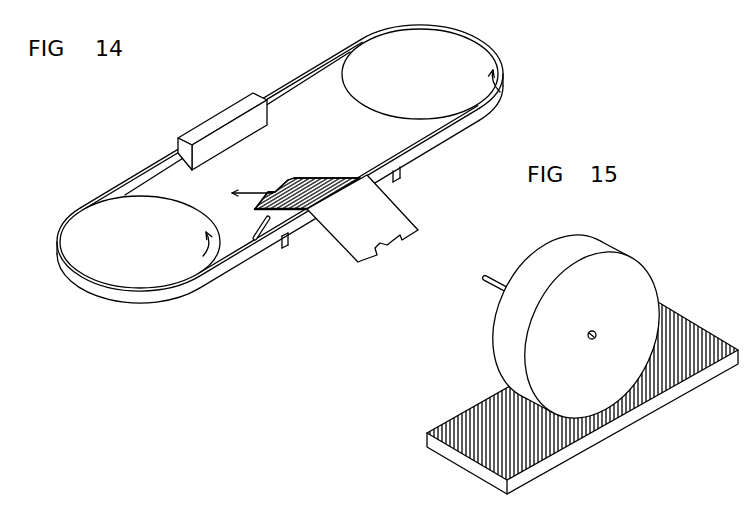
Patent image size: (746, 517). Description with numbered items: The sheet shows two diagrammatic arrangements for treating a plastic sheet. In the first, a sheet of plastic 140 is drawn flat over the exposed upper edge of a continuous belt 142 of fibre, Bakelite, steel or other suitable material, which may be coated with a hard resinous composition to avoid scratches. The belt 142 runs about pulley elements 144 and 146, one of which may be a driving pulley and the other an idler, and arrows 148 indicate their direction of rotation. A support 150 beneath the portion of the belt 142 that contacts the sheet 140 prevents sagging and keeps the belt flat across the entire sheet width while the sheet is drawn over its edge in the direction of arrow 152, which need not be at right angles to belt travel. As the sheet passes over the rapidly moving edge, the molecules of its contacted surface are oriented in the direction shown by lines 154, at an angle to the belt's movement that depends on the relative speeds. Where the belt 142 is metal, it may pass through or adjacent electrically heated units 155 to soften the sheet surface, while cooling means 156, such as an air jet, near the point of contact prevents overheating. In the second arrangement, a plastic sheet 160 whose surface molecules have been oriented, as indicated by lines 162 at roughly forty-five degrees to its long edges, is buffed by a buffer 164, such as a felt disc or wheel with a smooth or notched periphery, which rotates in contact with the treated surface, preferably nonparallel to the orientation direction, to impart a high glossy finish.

In FIG. 14, the sheet of plastic 140 is at (388, 212).
In FIG. 14, the continuous belt 142 is at (447, 139).
In FIG. 14, the pulley element 144 is at (440, 61).
In FIG. 14, the pulley element 146 is at (151, 230).
In FIG. 14, the arrows 148 is at (502, 80).
In FIG. 14, the support 150 is at (298, 235).
In FIG. 14, the arrow 152 is at (296, 172).
In FIG. 14, the lines 154 is at (318, 191).
In FIG. 14, the electrically heated units 155 is at (250, 97).
In FIG. 14, the cooling means 156 is at (255, 227).
In FIG. 15, the plastic sheet 160 is at (438, 450).
In FIG. 15, the lines 162 is at (473, 414).
In FIG. 15, the buffer 164 is at (632, 278).